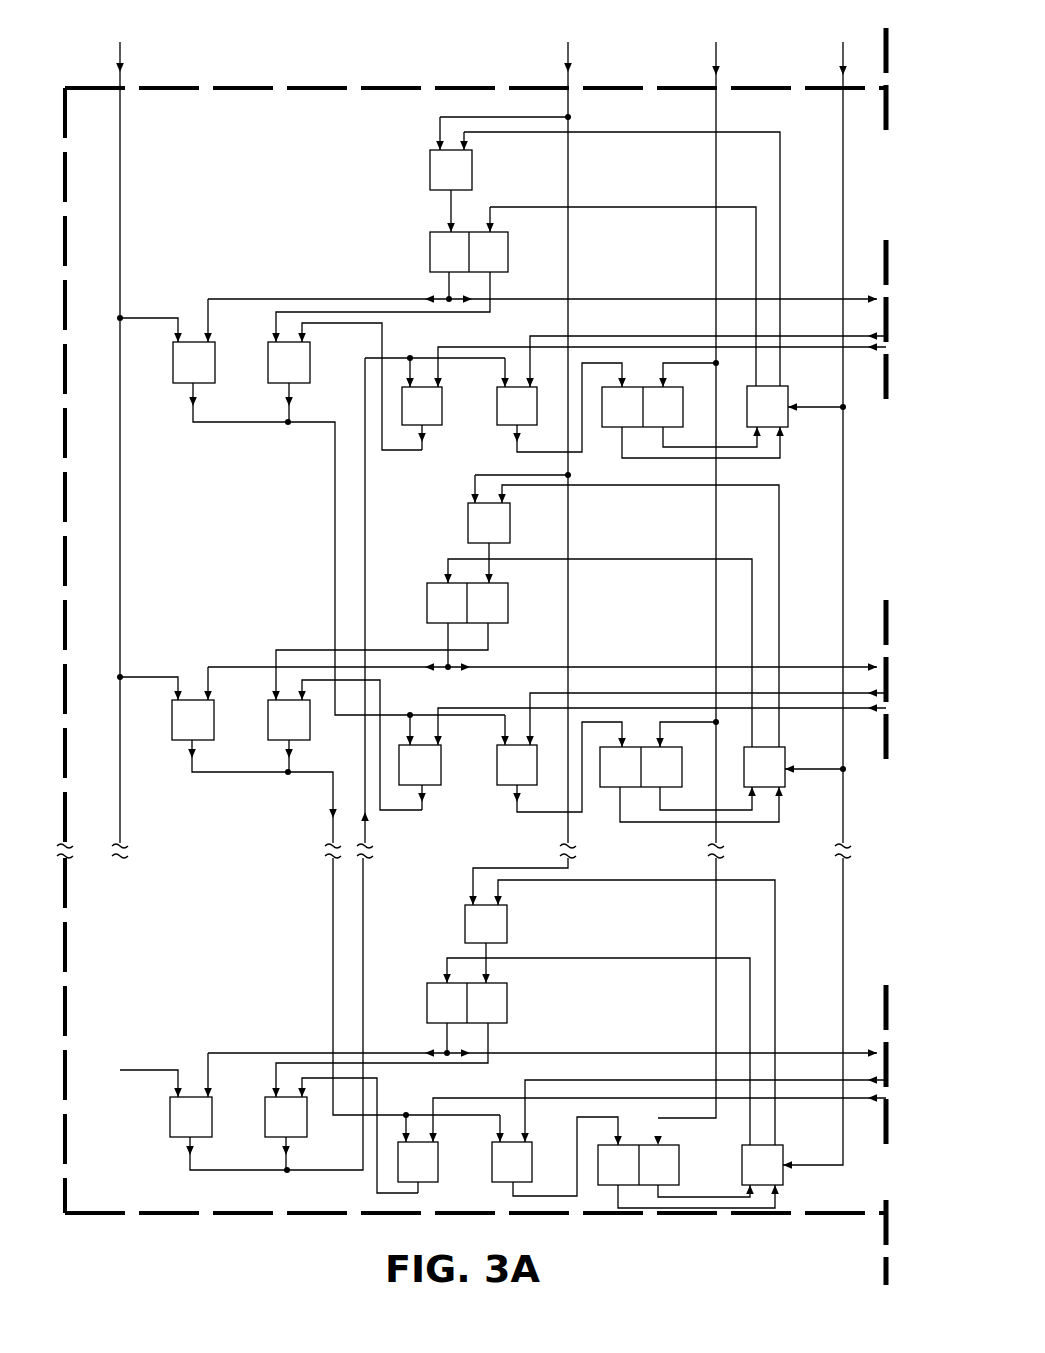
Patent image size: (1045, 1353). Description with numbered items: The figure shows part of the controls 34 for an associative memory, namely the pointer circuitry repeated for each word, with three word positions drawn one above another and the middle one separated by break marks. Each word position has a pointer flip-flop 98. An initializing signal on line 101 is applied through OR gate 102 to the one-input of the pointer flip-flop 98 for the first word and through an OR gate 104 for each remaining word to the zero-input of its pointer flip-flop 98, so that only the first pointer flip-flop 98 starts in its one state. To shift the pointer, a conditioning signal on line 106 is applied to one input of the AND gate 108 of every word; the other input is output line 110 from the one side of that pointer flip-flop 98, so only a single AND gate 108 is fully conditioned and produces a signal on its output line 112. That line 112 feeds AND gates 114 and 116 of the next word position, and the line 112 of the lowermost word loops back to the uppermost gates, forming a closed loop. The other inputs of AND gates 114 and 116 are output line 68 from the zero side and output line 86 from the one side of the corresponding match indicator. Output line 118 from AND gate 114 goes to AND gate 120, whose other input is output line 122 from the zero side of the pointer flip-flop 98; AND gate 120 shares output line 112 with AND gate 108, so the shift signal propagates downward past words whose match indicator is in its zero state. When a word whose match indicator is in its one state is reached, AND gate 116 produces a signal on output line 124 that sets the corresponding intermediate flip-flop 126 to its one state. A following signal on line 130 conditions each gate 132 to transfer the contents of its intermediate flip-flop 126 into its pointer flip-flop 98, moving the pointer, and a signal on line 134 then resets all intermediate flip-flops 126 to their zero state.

The controls 34 is at (364, 86).
The output line from 0 side of match indicator 68 is at (484, 346).
The output line from 1 side of match indicator 86 is at (530, 378).
The pointer flip-flop 98 is at (427, 1002).
The initializing signal line 101 is at (454, 880).
The OR gate 102 is at (472, 169).
The OR gate 104 is at (468, 523).
The conditioning signal line 106 is at (122, 62).
The AND gate 108 is at (173, 361).
The output line from 1 side of pointer flip-flop 110 is at (306, 298).
The output line 112 is at (256, 420).
The AND gate 114 is at (442, 405).
The AND gate 116 is at (497, 420).
The output line from AND gate 114 118 is at (382, 345).
The AND gate 120 is at (268, 361).
The output line from 0 side of pointer flip-flop 122 is at (276, 316).
The output line from AND gate 116 124 is at (582, 446).
The intermediate flip-flop 126 is at (624, 389).
The transfer signal line 130 is at (826, 1186).
The gate 132 is at (788, 394).
The reset line 134 is at (698, 1132).